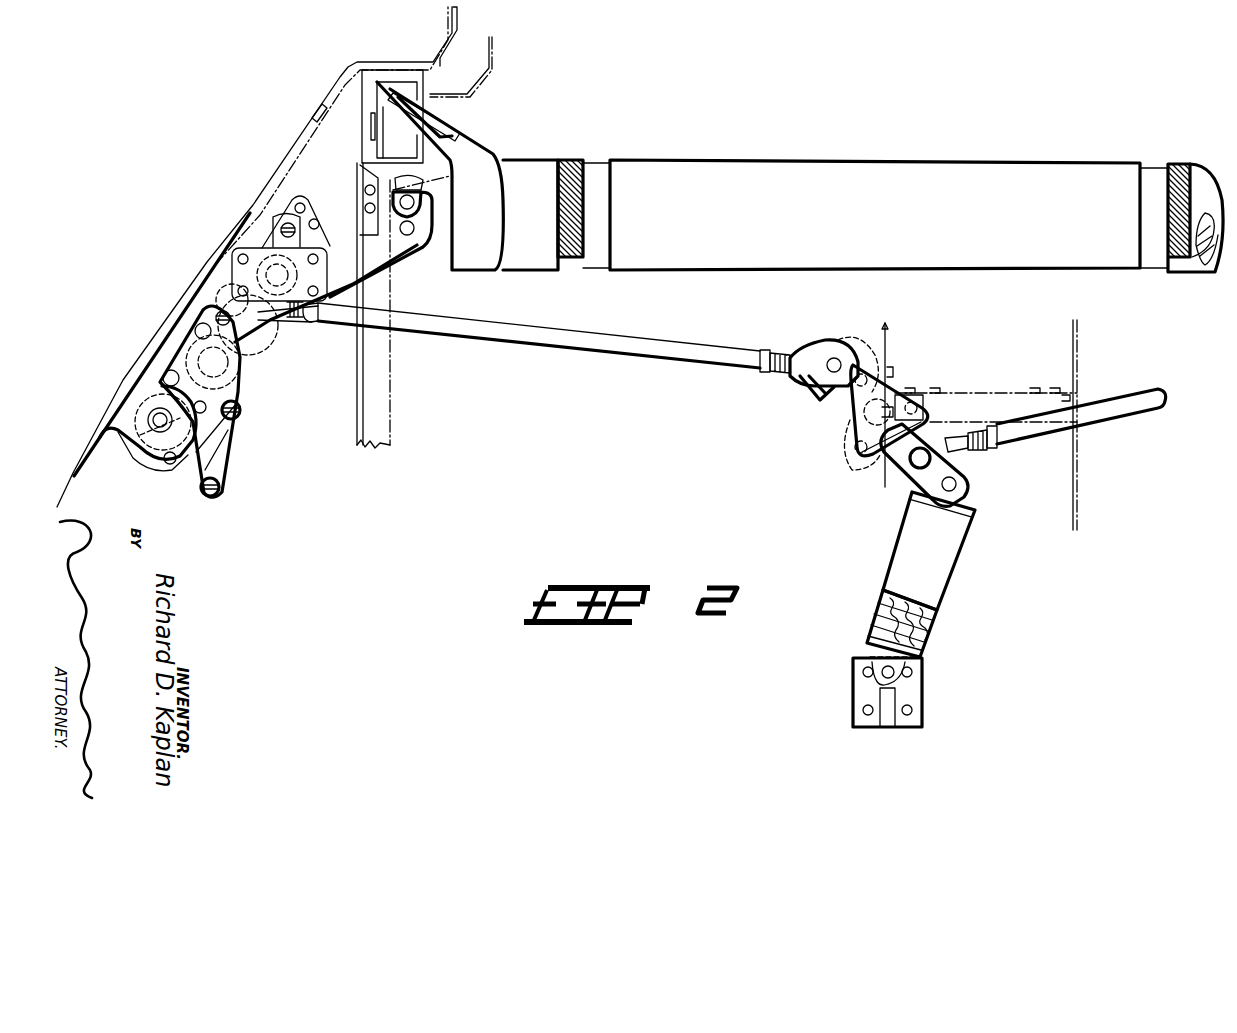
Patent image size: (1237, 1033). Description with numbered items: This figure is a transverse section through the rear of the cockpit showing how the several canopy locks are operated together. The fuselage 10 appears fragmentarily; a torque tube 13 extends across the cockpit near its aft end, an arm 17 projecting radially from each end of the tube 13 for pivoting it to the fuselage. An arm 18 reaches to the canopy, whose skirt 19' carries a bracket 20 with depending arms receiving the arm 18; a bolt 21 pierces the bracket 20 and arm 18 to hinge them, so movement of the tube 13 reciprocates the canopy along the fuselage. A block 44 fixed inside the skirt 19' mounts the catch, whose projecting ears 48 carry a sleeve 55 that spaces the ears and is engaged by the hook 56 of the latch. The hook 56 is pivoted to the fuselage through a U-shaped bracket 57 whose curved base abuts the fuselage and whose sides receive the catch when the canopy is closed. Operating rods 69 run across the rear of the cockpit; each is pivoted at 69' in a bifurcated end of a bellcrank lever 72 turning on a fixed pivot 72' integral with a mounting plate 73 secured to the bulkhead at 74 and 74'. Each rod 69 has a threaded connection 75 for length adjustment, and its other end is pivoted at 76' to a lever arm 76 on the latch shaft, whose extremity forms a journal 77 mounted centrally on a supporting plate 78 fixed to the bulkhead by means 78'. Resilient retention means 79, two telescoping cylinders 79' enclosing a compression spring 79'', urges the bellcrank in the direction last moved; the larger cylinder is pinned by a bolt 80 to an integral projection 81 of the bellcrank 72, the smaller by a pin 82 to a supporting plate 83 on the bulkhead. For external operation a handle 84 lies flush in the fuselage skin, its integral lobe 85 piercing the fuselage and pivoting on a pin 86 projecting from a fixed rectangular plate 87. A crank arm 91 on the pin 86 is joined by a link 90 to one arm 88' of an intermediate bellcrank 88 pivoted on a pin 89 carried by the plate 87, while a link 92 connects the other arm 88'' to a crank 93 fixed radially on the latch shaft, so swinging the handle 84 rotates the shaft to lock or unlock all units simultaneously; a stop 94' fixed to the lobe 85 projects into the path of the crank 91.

The fuselage 10 is at (275, 178).
The torque tube 13 is at (852, 168).
The arm 17 is at (580, 172).
The arm 18 is at (452, 106).
The canopy skirt 19' is at (316, 89).
The bracket 20 is at (365, 106).
The bolt 21 is at (371, 129).
The block 44 is at (437, 113).
The ears 48 is at (428, 182).
The sleeve 55 is at (415, 200).
The hook 56 is at (408, 178).
The bracket 57 is at (405, 264).
The operating rod 69 is at (742, 377).
The pivotal connection 69' is at (879, 409).
The bellcrank lever 72 is at (862, 410).
The fixed pivot 72' is at (866, 428).
The mounting plate 73 is at (858, 448).
The securing means 74 is at (864, 378).
The pivot 74' is at (862, 455).
The threaded connection 75 is at (298, 325).
The lever arm 76 is at (326, 296).
The pivot 76' is at (284, 334).
The journal 77 is at (322, 262).
The supporting plate 78 is at (292, 274).
The attaching means 78' is at (315, 234).
The resilient retention means 79 is at (916, 574).
The cylinder 79' is at (946, 551).
The compression spring 79'' is at (880, 623).
The bolt or pin 80 is at (956, 491).
The integral projection 81 is at (948, 468).
The pin 82 is at (905, 674).
The supporting plate 83 is at (923, 696).
The external handle 84 is at (160, 332).
The lobe 85 is at (144, 460).
The bolt or pin 86 is at (132, 445).
The fixed rectangular plate 87 is at (200, 437).
The intermediate bellcrank 88 is at (222, 390).
The bellcrank arm 88' is at (254, 415).
The bellcrank arm 88'' is at (183, 308).
The pin 89 is at (243, 373).
The link 90 is at (228, 456).
The crank arm 91 is at (194, 489).
The link 92 is at (228, 300).
The crank 93 is at (316, 232).
The stop 94' is at (143, 447).